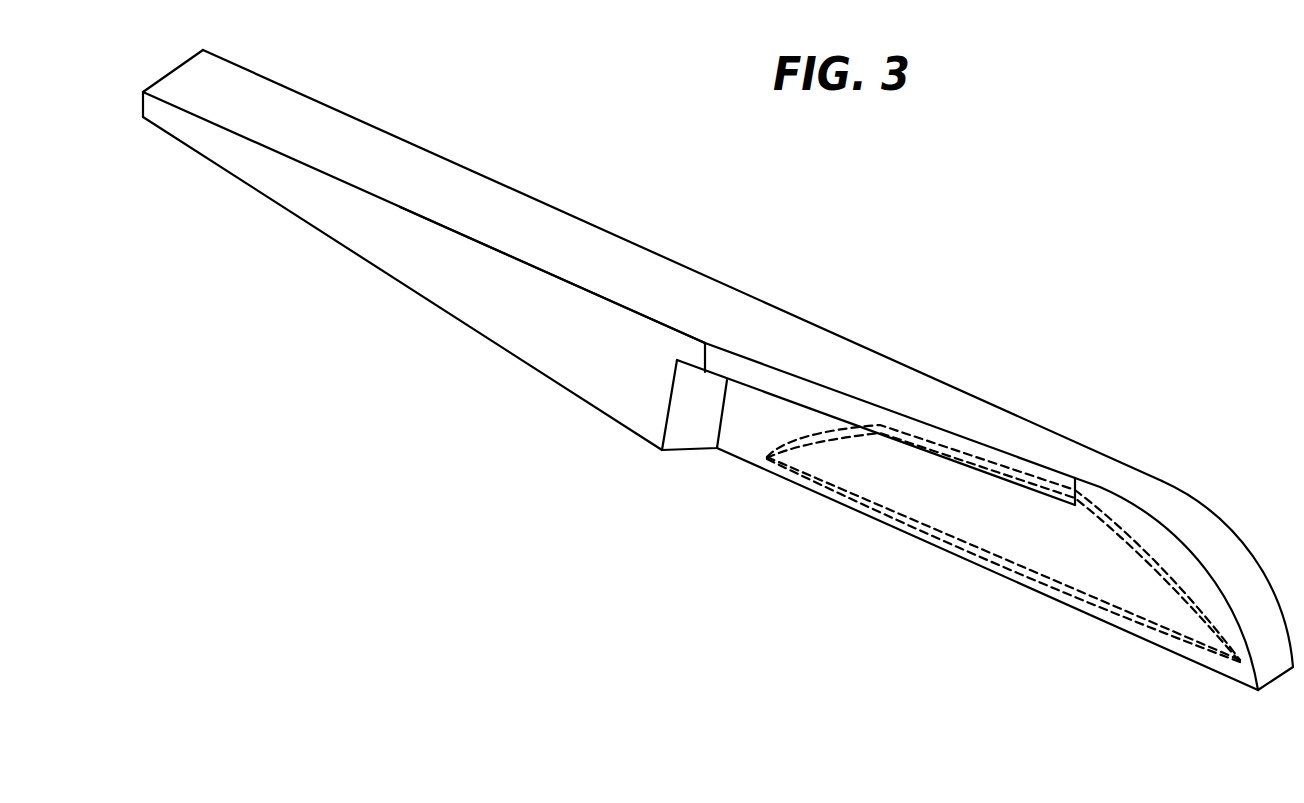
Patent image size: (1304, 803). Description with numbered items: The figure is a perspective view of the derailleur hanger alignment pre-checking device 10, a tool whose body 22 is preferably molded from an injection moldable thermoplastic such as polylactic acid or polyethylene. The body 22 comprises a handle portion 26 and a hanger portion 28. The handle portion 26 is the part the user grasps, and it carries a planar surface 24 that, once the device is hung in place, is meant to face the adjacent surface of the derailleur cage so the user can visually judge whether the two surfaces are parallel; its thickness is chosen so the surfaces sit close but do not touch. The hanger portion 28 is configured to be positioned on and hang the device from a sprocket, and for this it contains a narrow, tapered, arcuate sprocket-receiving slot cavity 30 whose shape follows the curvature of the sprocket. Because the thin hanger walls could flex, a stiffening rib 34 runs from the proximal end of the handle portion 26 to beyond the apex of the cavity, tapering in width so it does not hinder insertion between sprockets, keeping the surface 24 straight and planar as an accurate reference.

The derailleur hanger alignment pre-checking device 10 is at (718, 370).
The body 22 is at (652, 265).
The planar surface 24 is at (563, 335).
The handle portion 26 is at (403, 250).
The hanger portion 28 is at (1005, 557).
The sprocket-receiving slot cavity 30 is at (1068, 540).
The stiffening rib 34 is at (773, 383).